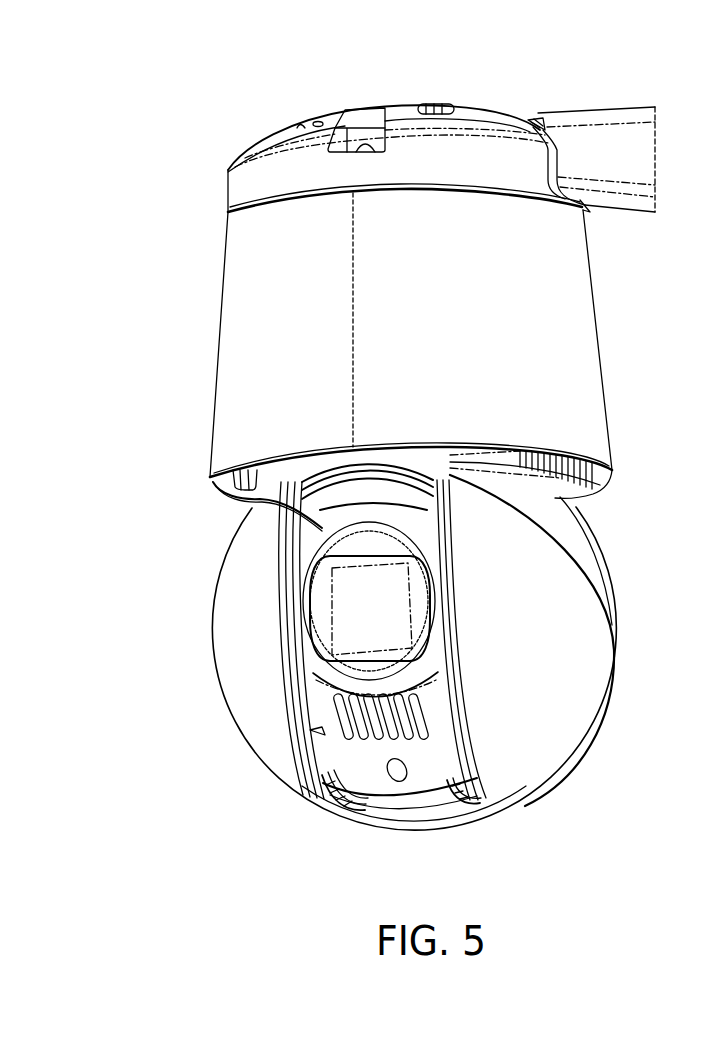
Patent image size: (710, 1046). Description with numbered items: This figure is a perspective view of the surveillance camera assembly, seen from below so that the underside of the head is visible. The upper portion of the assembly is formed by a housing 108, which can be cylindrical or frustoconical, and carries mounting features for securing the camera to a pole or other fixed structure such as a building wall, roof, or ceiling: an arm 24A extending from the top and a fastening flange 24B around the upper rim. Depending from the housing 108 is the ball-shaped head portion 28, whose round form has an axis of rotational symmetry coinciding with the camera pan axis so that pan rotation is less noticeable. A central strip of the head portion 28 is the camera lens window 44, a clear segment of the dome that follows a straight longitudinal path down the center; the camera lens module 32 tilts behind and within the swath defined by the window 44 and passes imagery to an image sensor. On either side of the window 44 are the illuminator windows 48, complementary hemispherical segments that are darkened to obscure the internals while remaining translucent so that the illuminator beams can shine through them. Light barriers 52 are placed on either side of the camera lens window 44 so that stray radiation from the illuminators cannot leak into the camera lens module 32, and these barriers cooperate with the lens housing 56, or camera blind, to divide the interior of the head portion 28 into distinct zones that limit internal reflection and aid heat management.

The arm 24A is at (573, 130).
The fastening flange 24B is at (277, 145).
The housing 108 is at (582, 363).
The lens housing 56 is at (327, 521).
The camera lens module 32 is at (353, 600).
The head portion 28 is at (620, 538).
The illuminator windows 48 is at (263, 749).
The light barriers 52 is at (313, 803).
The window 44 is at (413, 830).